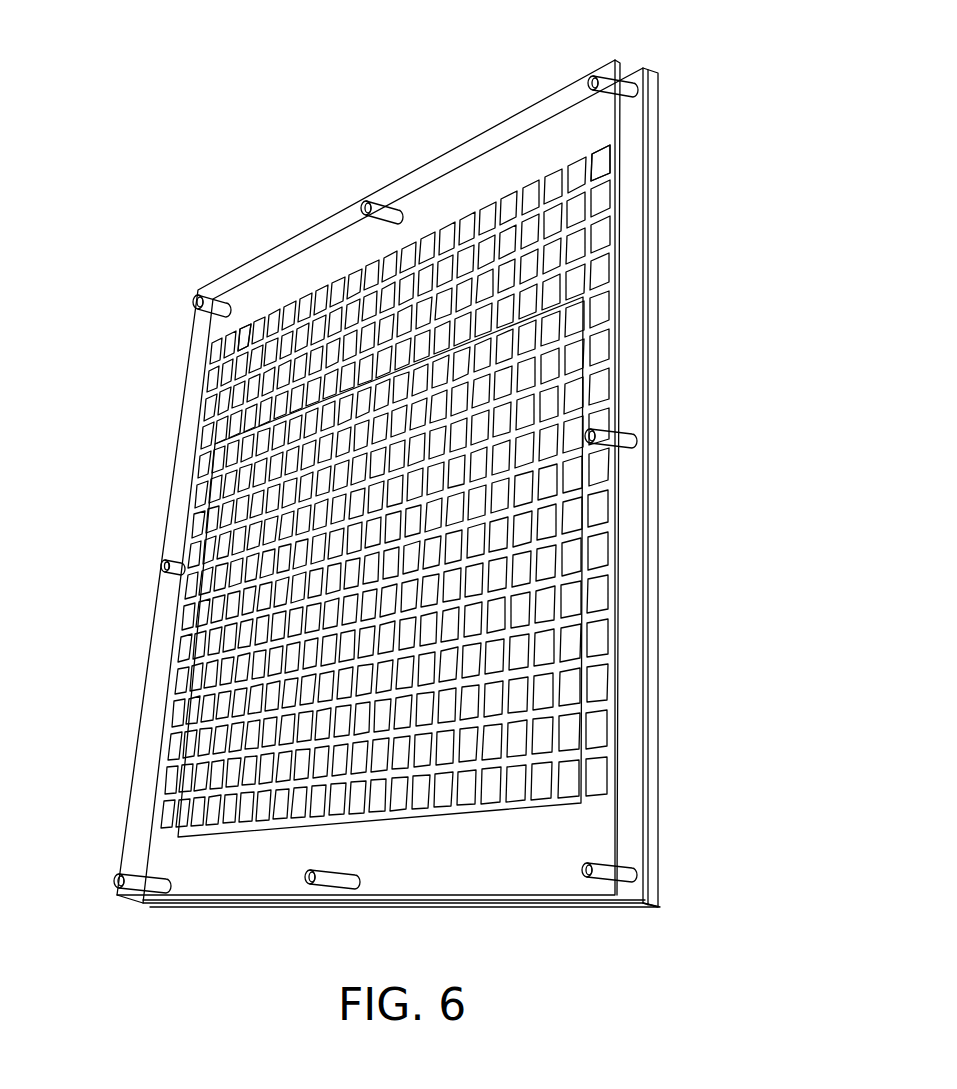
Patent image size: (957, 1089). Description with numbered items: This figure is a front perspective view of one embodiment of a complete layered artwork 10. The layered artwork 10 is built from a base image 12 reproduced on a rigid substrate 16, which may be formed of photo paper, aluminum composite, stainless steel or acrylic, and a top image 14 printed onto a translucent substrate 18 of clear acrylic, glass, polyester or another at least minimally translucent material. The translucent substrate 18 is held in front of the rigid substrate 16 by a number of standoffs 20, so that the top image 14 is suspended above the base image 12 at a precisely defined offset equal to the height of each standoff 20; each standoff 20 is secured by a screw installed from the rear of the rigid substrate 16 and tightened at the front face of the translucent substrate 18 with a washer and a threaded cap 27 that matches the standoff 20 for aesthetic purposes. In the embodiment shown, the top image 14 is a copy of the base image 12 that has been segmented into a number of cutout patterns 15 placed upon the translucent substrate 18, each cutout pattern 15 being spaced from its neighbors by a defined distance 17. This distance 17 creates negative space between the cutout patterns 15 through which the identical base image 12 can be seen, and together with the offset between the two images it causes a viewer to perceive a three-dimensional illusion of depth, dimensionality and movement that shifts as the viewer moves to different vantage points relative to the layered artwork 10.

The layered artwork 10 is at (178, 251).
The base image 12 is at (557, 802).
The top image 14 is at (503, 180).
The cutout patterns 15 is at (598, 162).
The rigid substrate 16 is at (655, 550).
The distance 17 is at (253, 325).
The translucent substrate 18 is at (542, 868).
The standoffs 20 is at (627, 436).
The threaded cap 27 is at (597, 82).